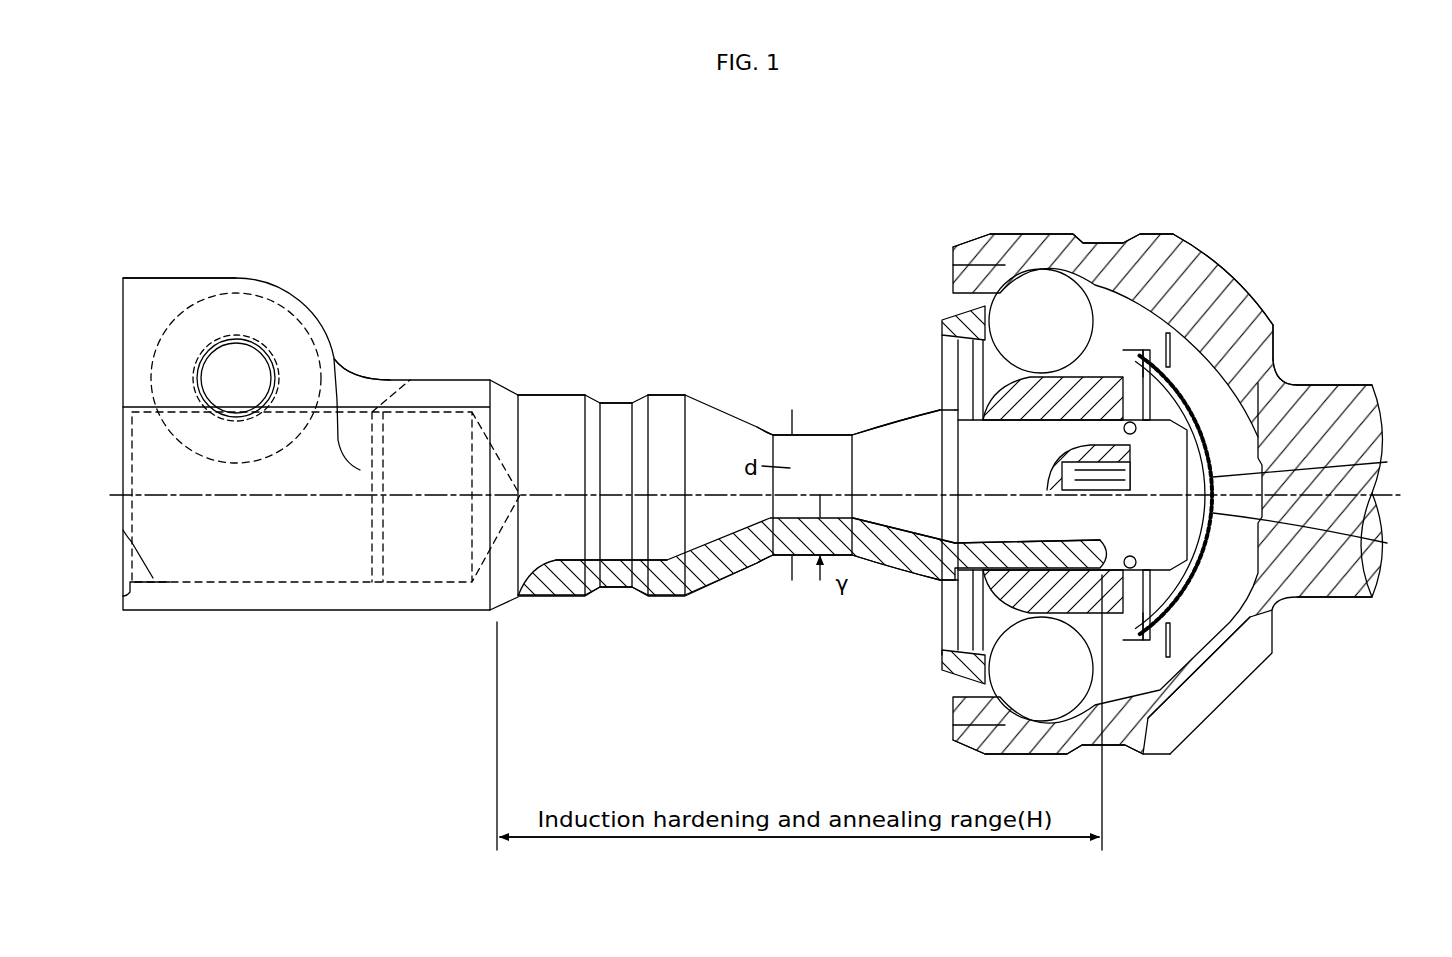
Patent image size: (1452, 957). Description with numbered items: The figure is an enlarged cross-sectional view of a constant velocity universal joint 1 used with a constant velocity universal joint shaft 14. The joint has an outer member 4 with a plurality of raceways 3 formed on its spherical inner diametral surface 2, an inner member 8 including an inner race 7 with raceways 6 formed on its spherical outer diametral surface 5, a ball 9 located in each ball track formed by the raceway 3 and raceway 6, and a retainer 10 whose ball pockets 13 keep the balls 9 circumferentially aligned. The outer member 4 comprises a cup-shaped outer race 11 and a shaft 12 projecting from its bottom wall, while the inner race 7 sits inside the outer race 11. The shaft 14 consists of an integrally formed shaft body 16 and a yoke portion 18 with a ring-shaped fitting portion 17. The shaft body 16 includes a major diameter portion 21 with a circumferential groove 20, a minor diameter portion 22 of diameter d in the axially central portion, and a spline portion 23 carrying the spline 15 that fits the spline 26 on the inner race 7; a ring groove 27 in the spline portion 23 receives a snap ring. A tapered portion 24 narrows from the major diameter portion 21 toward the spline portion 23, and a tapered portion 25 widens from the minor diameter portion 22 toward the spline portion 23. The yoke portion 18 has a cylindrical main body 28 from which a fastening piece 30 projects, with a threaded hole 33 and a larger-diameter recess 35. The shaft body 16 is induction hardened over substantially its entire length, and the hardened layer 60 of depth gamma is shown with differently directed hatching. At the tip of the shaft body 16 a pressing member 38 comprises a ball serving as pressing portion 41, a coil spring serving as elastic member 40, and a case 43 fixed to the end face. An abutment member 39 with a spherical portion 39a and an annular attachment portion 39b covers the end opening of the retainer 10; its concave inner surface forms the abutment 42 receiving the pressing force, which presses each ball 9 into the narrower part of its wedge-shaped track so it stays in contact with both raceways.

The constant velocity universal joint 1 is at (925, 196).
The inner diametral surface 2 is at (1092, 667).
The raceway 3 is at (1097, 290).
The outer member 4 is at (1208, 734).
The outer diametral surface 5 is at (1127, 667).
The raceway 6 is at (1160, 350).
The inner race 7 is at (995, 598).
The inner member 8 is at (808, 586).
The ball 9 is at (1030, 282).
The retainer 10 is at (1143, 316).
The outer race 11 is at (1248, 690).
The shaft 12 is at (1350, 381).
The ball pocket 13 is at (993, 316).
The constant velocity universal joint shaft 14 is at (738, 394).
The spline 15 is at (962, 392).
The shaft body 16 is at (759, 426).
The ring-shaped fitting portion 17 is at (154, 578).
The yoke portion 18 is at (384, 382).
The circumferential groove 20 is at (616, 412).
The major diameter portion 21 is at (551, 404).
The minor diameter portion 22 is at (820, 447).
The spline portion 23 is at (950, 524).
The tapered portion 24 is at (705, 424).
The tapered portion 25 is at (874, 446).
The spline 26 is at (1035, 421).
The ring groove 27 is at (1127, 553).
The cylindrical main body 28 is at (306, 612).
The fastening piece 30 is at (172, 290).
The threaded hole 33 is at (228, 348).
The larger-diameter recess 35 is at (300, 318).
The pressing member 38 is at (1298, 380).
The abutment member 39 is at (1197, 582).
The spherical portion 39a is at (1282, 326).
The attachment portion 39b is at (1206, 266).
The elastic member 40 is at (1076, 480).
The pressing portion 41 is at (1389, 466).
The abutment 42 is at (1389, 545).
The case 43 is at (1236, 318).
The hardened layer 60 is at (718, 588).